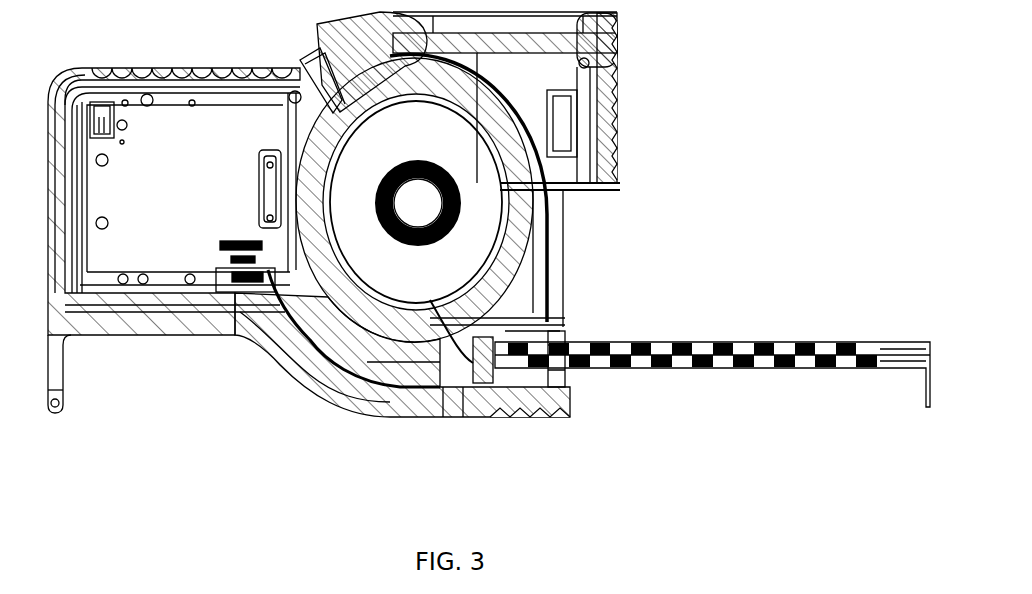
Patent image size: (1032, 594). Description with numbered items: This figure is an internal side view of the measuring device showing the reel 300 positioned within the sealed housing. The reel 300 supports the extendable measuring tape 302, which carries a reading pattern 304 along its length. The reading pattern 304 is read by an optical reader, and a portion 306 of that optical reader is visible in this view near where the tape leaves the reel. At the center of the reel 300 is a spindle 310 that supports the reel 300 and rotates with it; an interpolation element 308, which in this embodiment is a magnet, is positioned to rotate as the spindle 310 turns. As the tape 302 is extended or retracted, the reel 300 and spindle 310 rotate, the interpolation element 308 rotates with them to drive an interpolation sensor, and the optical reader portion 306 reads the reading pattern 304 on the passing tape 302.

The reel 300 is at (327, 115).
The extendable measuring tape 302 is at (663, 350).
The reading pattern 304 is at (722, 357).
The portion of optical reader 306 is at (307, 360).
The interpolation element 308 is at (452, 197).
The spindle 310 is at (417, 200).